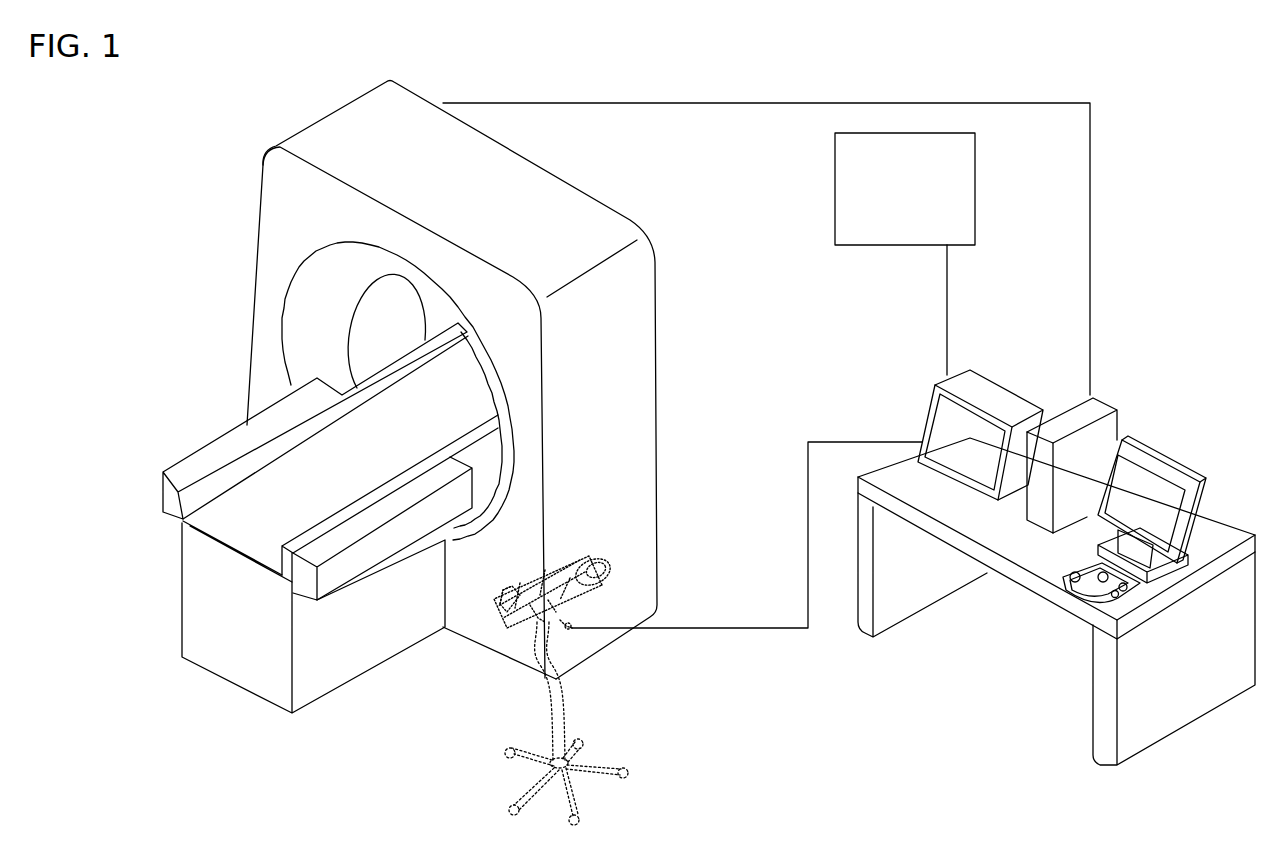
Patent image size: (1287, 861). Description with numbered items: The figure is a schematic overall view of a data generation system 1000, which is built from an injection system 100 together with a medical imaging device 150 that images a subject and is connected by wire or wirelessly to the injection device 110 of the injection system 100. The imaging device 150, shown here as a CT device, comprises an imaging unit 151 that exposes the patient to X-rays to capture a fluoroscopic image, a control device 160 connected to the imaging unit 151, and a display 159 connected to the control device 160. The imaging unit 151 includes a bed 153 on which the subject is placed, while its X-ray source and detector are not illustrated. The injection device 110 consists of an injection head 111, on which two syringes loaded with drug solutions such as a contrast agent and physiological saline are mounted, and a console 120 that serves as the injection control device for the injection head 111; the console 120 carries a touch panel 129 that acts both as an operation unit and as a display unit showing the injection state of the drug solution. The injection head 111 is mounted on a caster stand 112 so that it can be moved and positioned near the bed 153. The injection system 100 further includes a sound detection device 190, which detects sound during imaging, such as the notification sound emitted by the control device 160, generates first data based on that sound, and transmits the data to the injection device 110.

The data generation system 1000 is at (182, 173).
The injection system 100 is at (805, 233).
The injection device 110 is at (586, 537).
The injection head 111 is at (537, 570).
The caster stand 112 is at (563, 717).
The console 120 is at (948, 435).
The touch panel 129 is at (948, 459).
The medical imaging device 150 is at (437, 397).
The imaging unit 151 is at (262, 342).
The bed 153 is at (182, 510).
The display 159 is at (1155, 483).
The control device 160 is at (1040, 520).
The sound detection device 190 is at (865, 247).